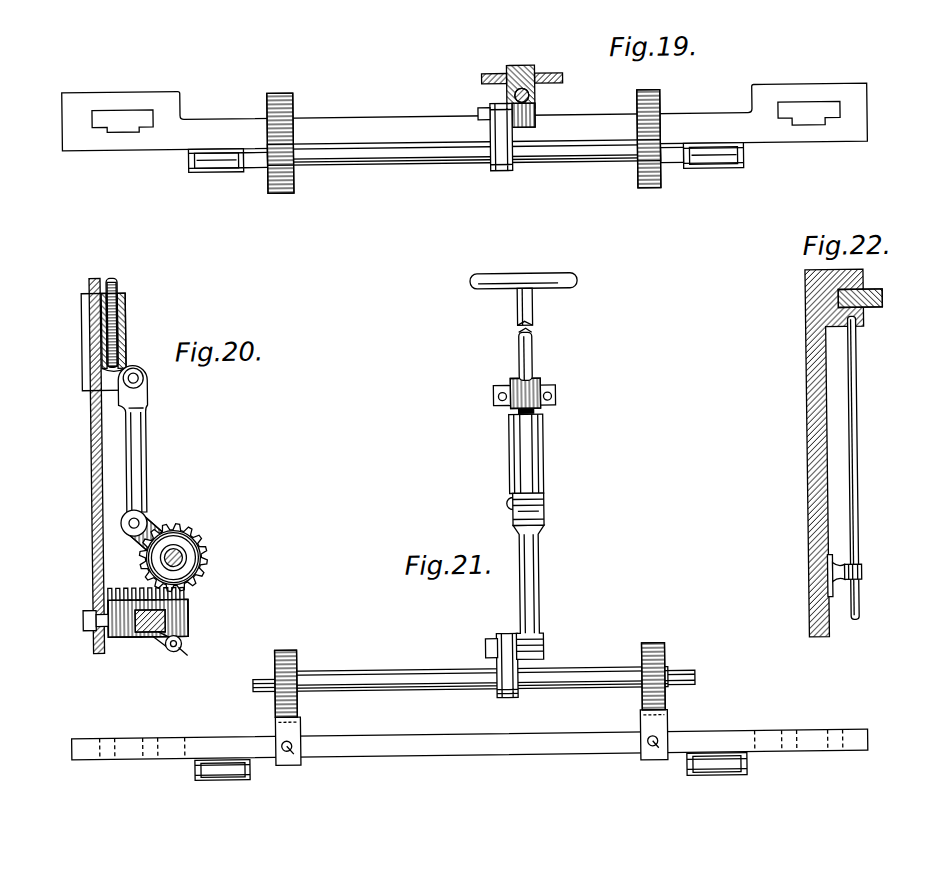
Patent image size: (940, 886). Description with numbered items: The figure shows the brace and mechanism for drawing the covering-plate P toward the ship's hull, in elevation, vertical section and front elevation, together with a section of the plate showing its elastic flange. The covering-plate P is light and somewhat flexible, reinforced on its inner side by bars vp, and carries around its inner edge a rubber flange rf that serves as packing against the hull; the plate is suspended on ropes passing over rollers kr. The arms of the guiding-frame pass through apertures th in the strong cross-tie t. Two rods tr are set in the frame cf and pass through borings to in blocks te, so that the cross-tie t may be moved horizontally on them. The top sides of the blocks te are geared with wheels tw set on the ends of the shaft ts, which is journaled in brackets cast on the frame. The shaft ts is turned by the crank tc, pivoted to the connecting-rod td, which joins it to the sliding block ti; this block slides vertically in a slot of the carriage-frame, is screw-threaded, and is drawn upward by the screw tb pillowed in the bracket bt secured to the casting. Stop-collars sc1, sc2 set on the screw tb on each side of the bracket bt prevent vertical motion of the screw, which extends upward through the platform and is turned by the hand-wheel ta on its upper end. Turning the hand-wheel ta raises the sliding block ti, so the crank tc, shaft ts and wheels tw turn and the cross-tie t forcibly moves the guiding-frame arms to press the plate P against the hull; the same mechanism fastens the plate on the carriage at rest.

In FIG. 19, the cross-tie t is at (382, 131).
In FIG. 20, the cross-tie t is at (140, 624).
In FIG. 21, the cross-tie t is at (451, 748).
In FIG. 19, the apertures th is at (132, 124).
In FIG. 21, the apertures th is at (111, 736).
In FIG. 19, the rollers kr is at (211, 167).
In FIG. 20, the rollers kr is at (176, 641).
In FIG. 21, the rollers kr is at (211, 767).
In FIG. 19, the shaft ts is at (412, 159).
In FIG. 20, the shaft ts is at (198, 562).
In FIG. 21, the shaft ts is at (385, 679).
In FIG. 19, the blocks te is at (287, 94).
In FIG. 20, the blocks te is at (176, 604).
In FIG. 21, the blocks te is at (287, 728).
In FIG. 19, the wheels tw is at (291, 190).
In FIG. 20, the wheels tw is at (194, 544).
In FIG. 21, the wheels tw is at (301, 640).
In FIG. 19, the screw tb is at (541, 93).
In FIG. 20, the screw tb is at (120, 279).
In FIG. 21, the screw tb is at (518, 356).
In FIG. 19, the sliding block ti is at (511, 92).
In FIG. 20, the sliding block ti is at (129, 321).
In FIG. 21, the sliding block ti is at (530, 456).
In FIG. 19, the crank tc is at (502, 130).
In FIG. 20, the crank tc is at (156, 529).
In FIG. 21, the crank tc is at (502, 650).
In FIG. 20, the connecting-rod td is at (138, 456).
In FIG. 21, the connecting-rod td is at (525, 579).
In FIG. 20, the frame cf is at (95, 458).
In FIG. 20, the rods tr is at (185, 619).
In FIG. 21, the rods tr is at (288, 748).
In FIG. 21, the borings to is at (282, 748).
In FIG. 21, the hand-wheel ta is at (590, 264).
In FIG. 21, the bracket bt is at (554, 393).
In FIG. 21, the stop-collar sc1 is at (539, 379).
In FIG. 21, the stop-collar sc2 is at (540, 408).
In FIG. 22, the covering-plate P is at (823, 432).
In FIG. 22, the rubber flange rf is at (886, 304).
In FIG. 22, the bars vp is at (850, 409).